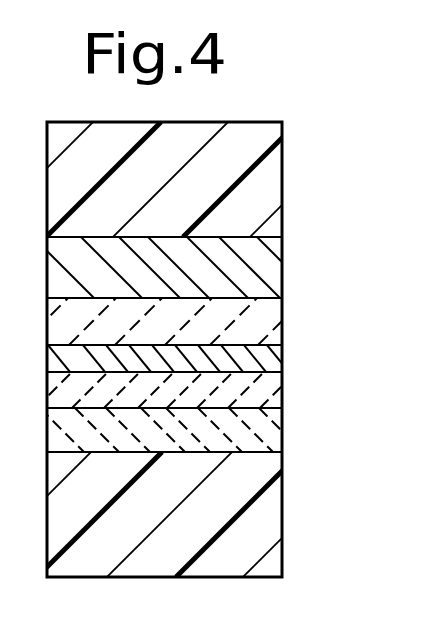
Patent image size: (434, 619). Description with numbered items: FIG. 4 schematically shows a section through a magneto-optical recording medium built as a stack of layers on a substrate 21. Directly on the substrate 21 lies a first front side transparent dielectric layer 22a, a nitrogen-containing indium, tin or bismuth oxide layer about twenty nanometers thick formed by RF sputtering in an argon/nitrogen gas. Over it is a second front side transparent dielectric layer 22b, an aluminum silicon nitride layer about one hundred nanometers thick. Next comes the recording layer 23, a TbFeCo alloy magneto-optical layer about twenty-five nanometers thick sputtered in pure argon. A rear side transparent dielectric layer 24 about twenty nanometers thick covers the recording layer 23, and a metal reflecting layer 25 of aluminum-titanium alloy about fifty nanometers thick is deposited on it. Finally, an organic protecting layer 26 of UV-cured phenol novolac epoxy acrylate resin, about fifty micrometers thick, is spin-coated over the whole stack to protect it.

The substrate 21 is at (272, 491).
The first front side transparent dielectric layer 22a is at (272, 438).
The second front side transparent dielectric layer 22b is at (272, 405).
The recording layer 23 is at (272, 371).
The rear side transparent dielectric layer 24 is at (272, 329).
The metal reflecting layer 25 is at (272, 279).
The organic protecting layer 26 is at (272, 169).